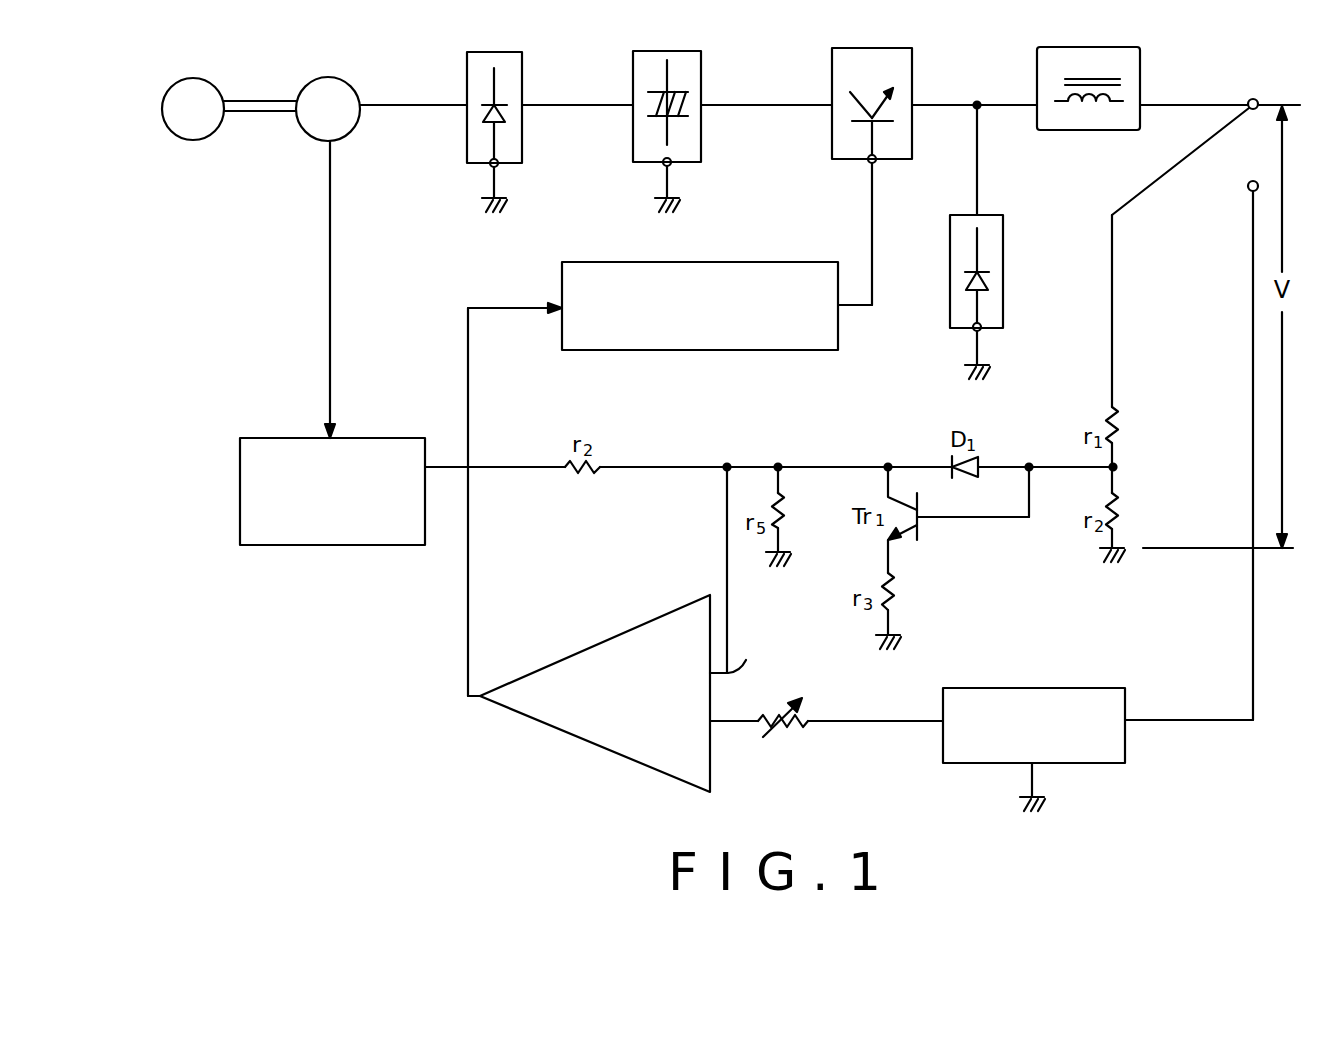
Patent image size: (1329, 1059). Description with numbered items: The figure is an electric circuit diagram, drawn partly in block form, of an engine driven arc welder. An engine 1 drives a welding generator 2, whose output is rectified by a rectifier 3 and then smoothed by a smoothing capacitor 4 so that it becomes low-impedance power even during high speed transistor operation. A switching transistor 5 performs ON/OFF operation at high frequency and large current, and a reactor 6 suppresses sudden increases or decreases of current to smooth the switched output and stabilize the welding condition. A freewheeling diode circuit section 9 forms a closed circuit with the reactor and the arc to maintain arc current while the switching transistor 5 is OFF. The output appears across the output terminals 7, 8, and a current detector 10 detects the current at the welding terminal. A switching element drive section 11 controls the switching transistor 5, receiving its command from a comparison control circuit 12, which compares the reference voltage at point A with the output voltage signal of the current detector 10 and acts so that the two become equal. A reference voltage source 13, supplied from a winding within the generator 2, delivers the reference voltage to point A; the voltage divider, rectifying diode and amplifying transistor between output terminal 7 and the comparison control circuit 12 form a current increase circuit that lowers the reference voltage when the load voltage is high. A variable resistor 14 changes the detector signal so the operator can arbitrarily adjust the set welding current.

The engine 1 is at (194, 78).
The generator 2 is at (346, 83).
The rectifier 3 is at (522, 75).
The smoothing capacitor 4 is at (701, 75).
The switching transistor 5 is at (912, 75).
The reactor 6 is at (1140, 70).
The output terminal 7 is at (1252, 98).
The output terminal 8 is at (1247, 189).
The freewheeling diode circuit section 9 is at (1003, 245).
The current detector 10 is at (1002, 688).
The switching element drive section 11 is at (700, 352).
The comparison control circuit 12 is at (592, 645).
The reference voltage source 13 is at (240, 463).
The variable resistor 14 is at (785, 697).